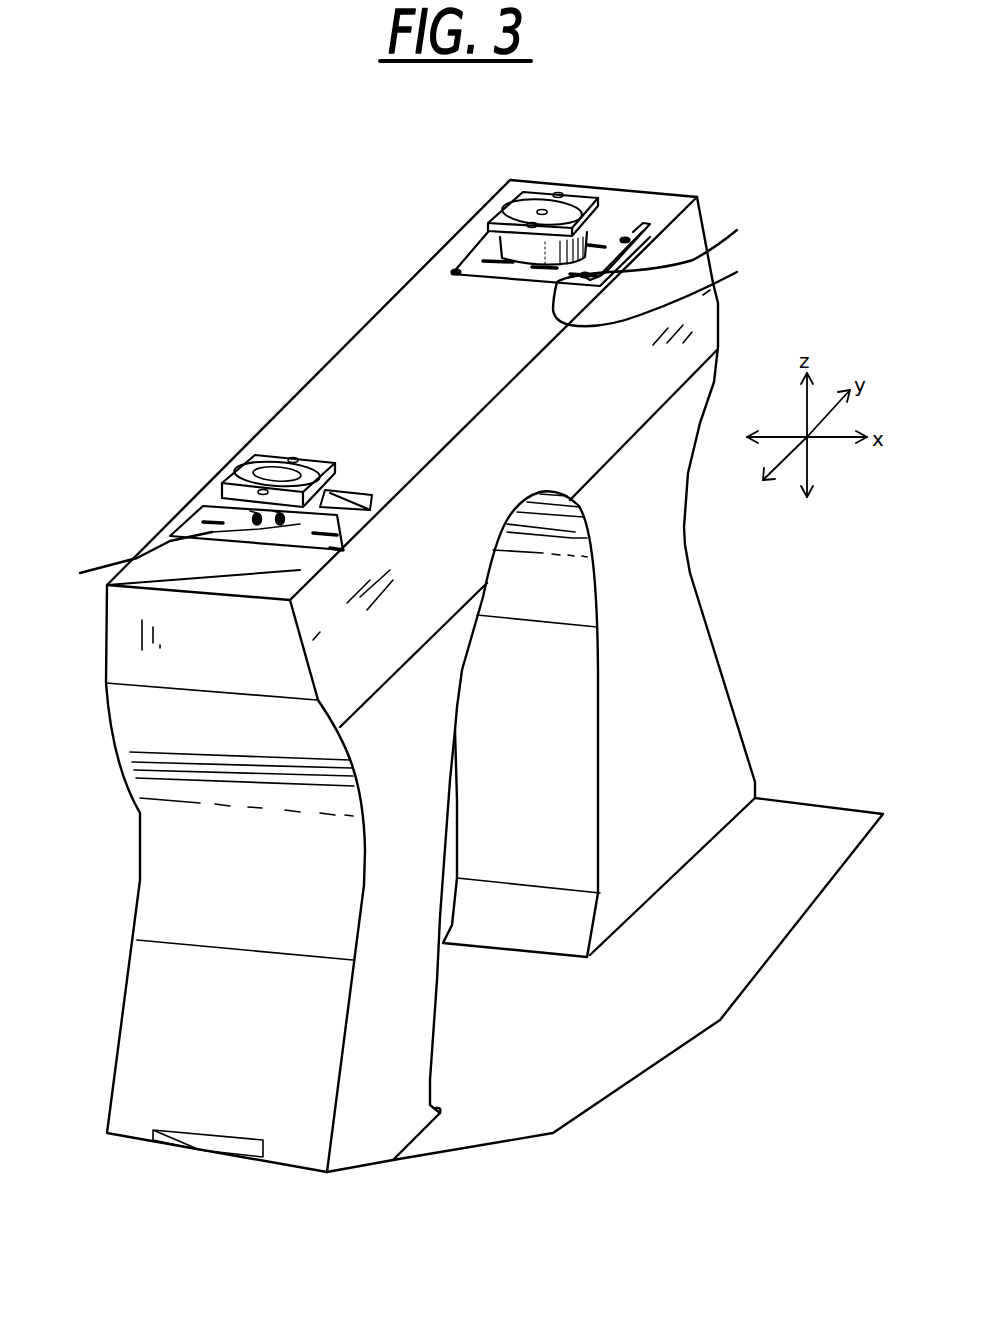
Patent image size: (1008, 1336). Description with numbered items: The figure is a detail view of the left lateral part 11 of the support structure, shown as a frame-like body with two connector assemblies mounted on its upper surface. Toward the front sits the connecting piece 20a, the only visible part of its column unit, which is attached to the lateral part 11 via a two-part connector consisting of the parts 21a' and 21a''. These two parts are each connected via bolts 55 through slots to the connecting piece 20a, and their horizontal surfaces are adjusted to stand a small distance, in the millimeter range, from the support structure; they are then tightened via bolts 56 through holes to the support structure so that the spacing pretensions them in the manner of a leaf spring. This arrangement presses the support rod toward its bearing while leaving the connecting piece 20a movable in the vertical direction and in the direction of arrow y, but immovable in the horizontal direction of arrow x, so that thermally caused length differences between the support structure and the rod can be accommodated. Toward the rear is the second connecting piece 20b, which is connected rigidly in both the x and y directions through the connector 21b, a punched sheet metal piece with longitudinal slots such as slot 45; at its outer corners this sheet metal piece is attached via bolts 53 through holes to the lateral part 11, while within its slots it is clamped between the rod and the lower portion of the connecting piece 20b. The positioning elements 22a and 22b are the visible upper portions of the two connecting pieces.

The left lateral part 11 is at (657, 547).
The connecting piece 20a is at (197, 471).
The connecting piece 20b is at (468, 229).
The connector part 21a' is at (211, 527).
The connector part 21a'' is at (312, 415).
The connector 21b is at (630, 203).
The positioning element of first unit 22a is at (258, 458).
The positioning element of second unit 22b is at (520, 195).
The longitudinal slot 45 is at (665, 278).
The bolts 53 is at (633, 232).
The bolts 55 is at (284, 518).
The bolts 56 is at (107, 585).